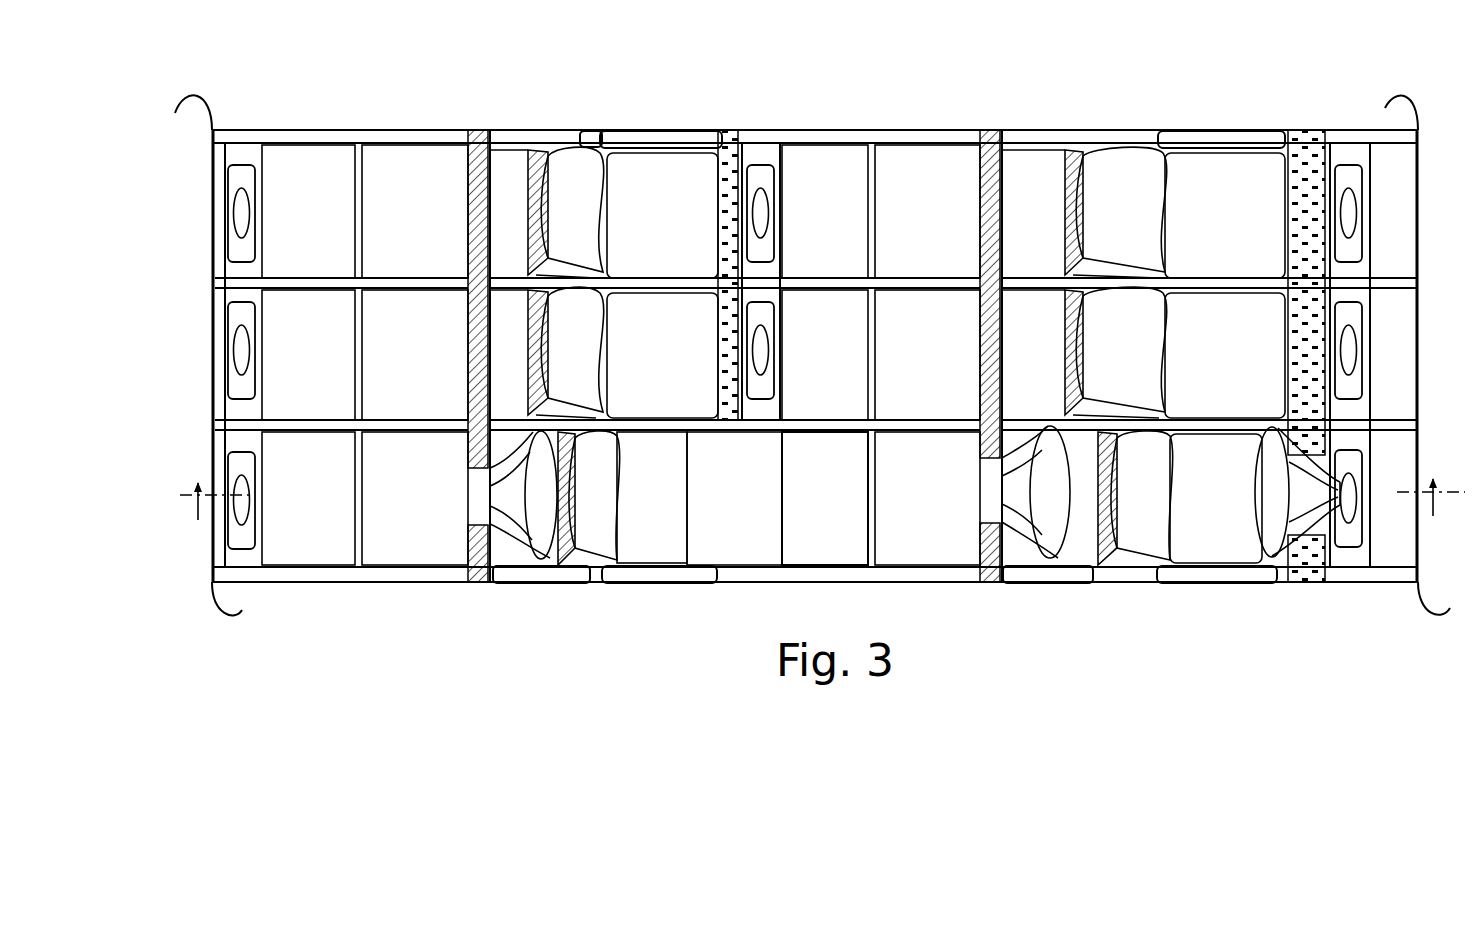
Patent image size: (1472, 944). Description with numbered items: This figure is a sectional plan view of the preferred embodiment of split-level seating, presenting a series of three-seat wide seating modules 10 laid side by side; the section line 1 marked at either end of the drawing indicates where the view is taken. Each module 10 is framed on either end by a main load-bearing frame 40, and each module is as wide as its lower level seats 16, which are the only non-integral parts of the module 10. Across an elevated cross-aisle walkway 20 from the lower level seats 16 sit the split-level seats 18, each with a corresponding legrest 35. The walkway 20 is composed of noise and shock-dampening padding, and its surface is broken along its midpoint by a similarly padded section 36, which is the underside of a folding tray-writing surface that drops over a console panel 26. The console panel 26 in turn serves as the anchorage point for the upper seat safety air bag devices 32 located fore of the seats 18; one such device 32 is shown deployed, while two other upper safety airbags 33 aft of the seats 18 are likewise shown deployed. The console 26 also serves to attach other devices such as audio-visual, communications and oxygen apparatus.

The section line 1 is at (822, 484).
The split-level seating module 10 is at (393, 106).
The lower level seat 16 is at (1097, 594).
The split-level seat 18 is at (946, 358).
The elevated cross-aisle walkway 20 is at (727, 126).
The console panel 26 is at (243, 163).
The upper seat safety air bag device 32 is at (236, 478).
The upper safety airbag 33 is at (780, 492).
The legrest 35 is at (671, 355).
The padded section 36 is at (565, 355).
The main load-bearing frame 40 is at (478, 126).